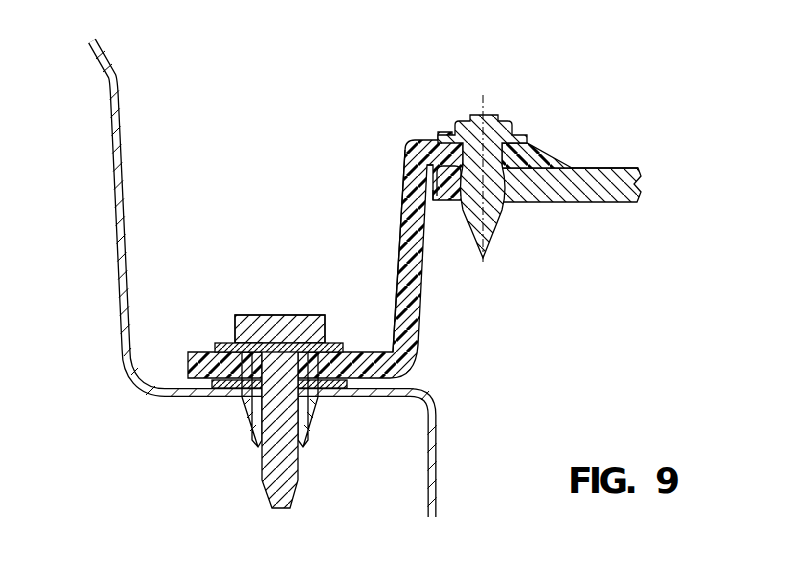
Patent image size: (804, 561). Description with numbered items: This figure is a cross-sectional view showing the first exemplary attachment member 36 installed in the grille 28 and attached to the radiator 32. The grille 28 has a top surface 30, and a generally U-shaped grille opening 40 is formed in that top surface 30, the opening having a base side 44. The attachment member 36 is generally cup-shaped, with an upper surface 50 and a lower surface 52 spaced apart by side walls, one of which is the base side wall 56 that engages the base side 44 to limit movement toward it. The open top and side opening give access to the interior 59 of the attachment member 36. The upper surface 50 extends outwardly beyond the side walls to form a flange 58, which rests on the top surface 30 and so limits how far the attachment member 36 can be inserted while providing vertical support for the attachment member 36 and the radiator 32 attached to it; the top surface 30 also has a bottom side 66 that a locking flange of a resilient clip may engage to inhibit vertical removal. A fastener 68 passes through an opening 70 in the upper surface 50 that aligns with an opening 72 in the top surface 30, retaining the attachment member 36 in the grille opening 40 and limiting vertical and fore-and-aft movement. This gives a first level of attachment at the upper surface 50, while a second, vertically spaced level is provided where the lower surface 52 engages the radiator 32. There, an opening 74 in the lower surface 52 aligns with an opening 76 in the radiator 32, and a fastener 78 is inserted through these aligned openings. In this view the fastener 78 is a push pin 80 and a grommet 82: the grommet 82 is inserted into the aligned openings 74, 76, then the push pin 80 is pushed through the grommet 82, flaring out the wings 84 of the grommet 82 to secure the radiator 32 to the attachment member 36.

The grille 28 is at (603, 171).
The top surface 30 is at (636, 172).
The radiator 32 is at (117, 207).
The attachment member 36 is at (339, 234).
The grille opening 40 is at (425, 173).
The base side 44 is at (424, 182).
The upper surface 50 is at (431, 140).
The lower surface 52 is at (378, 354).
The base side wall 56 is at (417, 273).
The flange 58 is at (548, 150).
The interior 59 is at (285, 331).
The bottom side 66 is at (525, 163).
The fastener 68 is at (525, 163).
The opening 70 is at (482, 178).
The opening 72 is at (498, 116).
The opening 74 is at (280, 411).
The opening 76 is at (280, 325).
The fastener 78 is at (308, 372).
The push pin 80 is at (272, 318).
The grommet 82 is at (223, 342).
The wings 84 is at (250, 406).